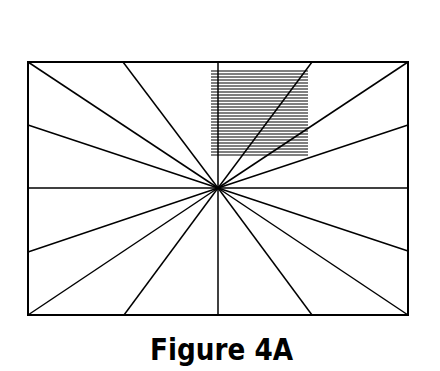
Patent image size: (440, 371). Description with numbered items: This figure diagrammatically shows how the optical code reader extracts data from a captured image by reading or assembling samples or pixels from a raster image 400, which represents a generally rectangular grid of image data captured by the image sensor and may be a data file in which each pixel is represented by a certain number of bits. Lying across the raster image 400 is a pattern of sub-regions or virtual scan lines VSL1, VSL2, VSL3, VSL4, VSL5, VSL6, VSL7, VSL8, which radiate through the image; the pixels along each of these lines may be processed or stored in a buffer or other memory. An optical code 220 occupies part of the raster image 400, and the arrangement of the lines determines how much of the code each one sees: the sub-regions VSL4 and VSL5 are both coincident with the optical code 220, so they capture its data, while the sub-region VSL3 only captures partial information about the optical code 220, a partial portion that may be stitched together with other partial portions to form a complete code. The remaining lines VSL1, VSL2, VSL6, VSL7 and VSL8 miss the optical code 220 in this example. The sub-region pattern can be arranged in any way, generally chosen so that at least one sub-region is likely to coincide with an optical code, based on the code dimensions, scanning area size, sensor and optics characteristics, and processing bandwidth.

The raster image 400 is at (177, 48).
The optical code 220 is at (258, 80).
The virtual scan line VSL1 is at (46, 186).
The virtual scan line VSL2 is at (37, 247).
The virtual scan line VSL3 is at (36, 304).
The virtual scan line VSL4 is at (120, 308).
The virtual scan line VSL5 is at (222, 246).
The virtual scan line VSL6 is at (277, 262).
The virtual scan line VSL7 is at (338, 262).
The virtual scan line VSL8 is at (330, 225).